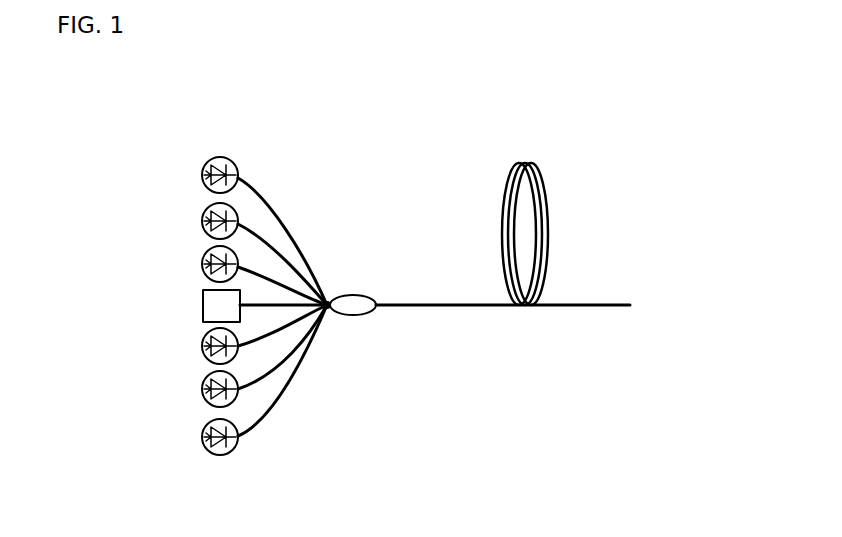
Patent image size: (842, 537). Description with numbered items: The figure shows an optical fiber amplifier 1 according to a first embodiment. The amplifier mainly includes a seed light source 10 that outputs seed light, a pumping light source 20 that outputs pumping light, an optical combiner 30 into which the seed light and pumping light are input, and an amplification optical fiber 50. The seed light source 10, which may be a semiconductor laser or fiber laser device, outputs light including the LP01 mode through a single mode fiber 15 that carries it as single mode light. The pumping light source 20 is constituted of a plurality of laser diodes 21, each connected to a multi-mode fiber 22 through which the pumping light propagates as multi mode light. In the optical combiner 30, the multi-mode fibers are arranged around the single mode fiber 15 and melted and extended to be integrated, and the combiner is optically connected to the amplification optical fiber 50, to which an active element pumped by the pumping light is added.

The optical fiber amplifier 1 is at (632, 158).
The seed light source 10 is at (230, 311).
The single mode fiber 15 is at (292, 304).
The pumping light source 20 is at (135, 242).
The laser diode 21 is at (203, 185).
The multi-mode fiber 22 is at (250, 192).
The optical combiner 30 is at (358, 307).
The amplification optical fiber 50 is at (547, 305).